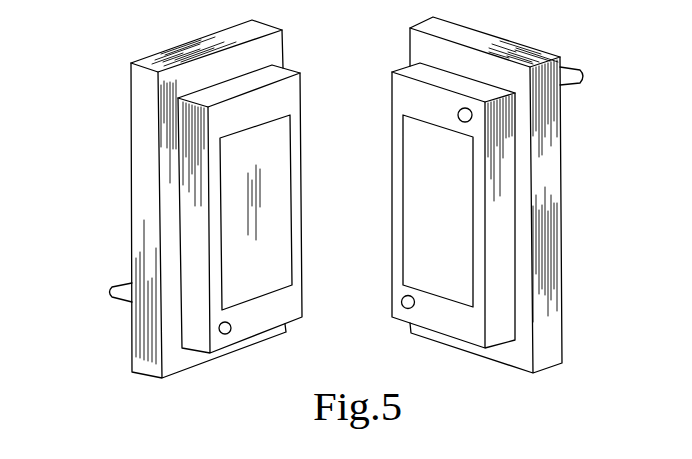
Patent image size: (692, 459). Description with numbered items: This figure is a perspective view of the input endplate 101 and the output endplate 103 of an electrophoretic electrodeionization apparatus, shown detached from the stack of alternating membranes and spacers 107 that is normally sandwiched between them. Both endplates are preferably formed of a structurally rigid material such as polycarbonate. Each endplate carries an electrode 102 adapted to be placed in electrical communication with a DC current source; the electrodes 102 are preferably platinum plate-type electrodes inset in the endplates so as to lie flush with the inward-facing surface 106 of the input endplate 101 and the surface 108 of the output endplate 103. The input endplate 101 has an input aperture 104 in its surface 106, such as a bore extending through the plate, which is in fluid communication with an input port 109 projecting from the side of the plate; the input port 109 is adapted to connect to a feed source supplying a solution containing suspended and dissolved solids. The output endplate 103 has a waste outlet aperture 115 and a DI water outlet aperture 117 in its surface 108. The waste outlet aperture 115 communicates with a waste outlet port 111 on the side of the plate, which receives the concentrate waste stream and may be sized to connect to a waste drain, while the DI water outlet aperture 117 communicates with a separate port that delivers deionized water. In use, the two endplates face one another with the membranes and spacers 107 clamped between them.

The input endplate 101 is at (222, 378).
The electrode 102 is at (437, 218).
The output endplate 103 is at (470, 372).
The input aperture 104 is at (250, 338).
The surface 106 is at (288, 92).
The spacer 107 is at (513, 186).
The surface 108 is at (415, 95).
The input port 109 is at (123, 283).
The waste outlet port 111 is at (573, 66).
The waste outlet aperture 115 is at (480, 123).
The DI water outlet aperture 117 is at (395, 288).